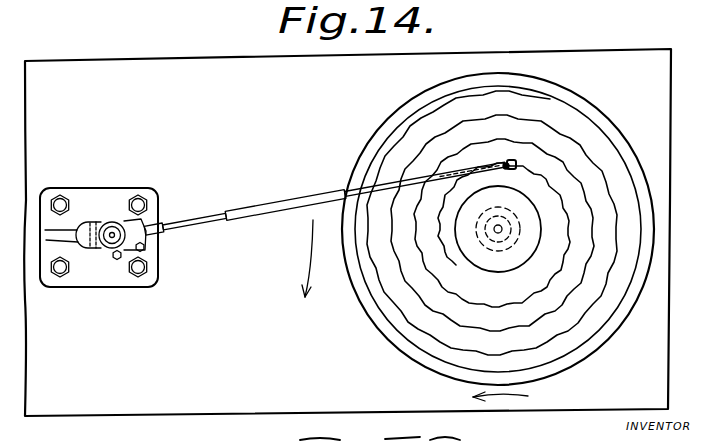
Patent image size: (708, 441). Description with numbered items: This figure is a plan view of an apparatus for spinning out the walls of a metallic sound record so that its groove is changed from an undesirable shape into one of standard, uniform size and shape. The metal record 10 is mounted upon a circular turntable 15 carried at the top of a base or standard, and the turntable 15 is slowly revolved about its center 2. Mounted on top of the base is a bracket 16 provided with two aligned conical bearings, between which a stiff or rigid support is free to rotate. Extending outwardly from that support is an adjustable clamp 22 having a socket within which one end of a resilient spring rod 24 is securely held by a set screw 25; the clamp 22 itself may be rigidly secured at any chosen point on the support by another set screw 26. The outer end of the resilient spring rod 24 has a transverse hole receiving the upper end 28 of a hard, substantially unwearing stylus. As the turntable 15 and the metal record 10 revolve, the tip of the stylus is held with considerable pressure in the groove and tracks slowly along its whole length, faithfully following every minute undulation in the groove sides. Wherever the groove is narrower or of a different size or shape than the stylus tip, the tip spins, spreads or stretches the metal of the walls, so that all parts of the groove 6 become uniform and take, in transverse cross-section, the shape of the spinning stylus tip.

The hub 2 is at (457, 272).
The groove 6 is at (422, 335).
The metal record 10 is at (587, 130).
The circular turntable 15 is at (388, 122).
The bracket 16 is at (92, 227).
The adjustable clamp 22 is at (110, 221).
The resilient spring rod 24 is at (279, 209).
The set screw 25 is at (145, 248).
The set screw 26 is at (116, 260).
The upper end of the stylus 28 is at (505, 162).